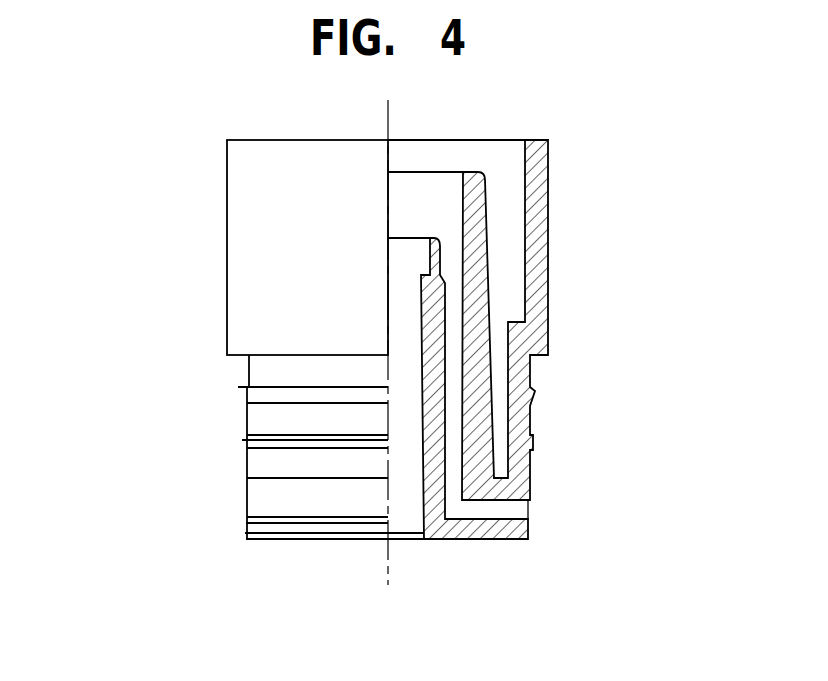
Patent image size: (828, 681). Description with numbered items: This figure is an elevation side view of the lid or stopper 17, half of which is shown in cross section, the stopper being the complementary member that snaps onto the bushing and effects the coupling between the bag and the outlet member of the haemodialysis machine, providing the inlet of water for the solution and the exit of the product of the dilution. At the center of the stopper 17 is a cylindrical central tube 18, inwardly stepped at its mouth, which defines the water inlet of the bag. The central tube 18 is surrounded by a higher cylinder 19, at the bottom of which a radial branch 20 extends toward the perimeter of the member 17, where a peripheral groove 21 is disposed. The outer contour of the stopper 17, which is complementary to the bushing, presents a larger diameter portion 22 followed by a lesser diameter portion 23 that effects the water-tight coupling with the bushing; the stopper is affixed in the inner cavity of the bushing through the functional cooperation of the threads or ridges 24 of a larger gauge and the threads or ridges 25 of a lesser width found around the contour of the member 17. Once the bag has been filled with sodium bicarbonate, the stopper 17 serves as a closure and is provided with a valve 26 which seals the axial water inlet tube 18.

The lid or stopper 17 is at (168, 175).
The cylindrical central tube 18 is at (402, 333).
The higher cylinder 19 is at (448, 260).
The radial branch 20 is at (488, 512).
The peripheral groove 21 is at (560, 510).
The larger diameter portion 22 is at (240, 328).
The lesser diameter portion 23 is at (256, 423).
The threads or ridges of larger gauge 24 is at (246, 394).
The threads or ridges of lesser width 25 is at (243, 443).
The valve 26 is at (405, 539).